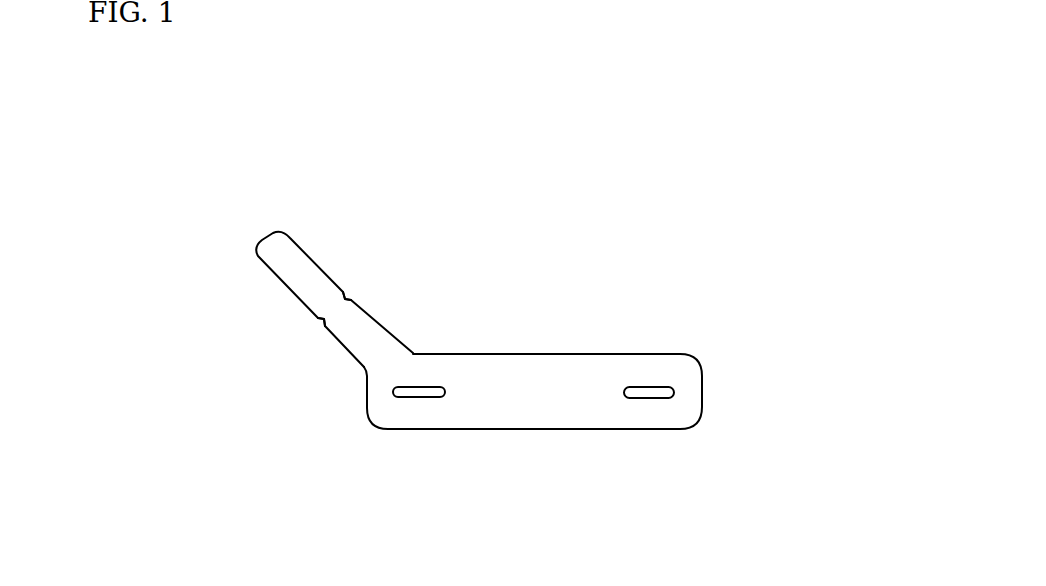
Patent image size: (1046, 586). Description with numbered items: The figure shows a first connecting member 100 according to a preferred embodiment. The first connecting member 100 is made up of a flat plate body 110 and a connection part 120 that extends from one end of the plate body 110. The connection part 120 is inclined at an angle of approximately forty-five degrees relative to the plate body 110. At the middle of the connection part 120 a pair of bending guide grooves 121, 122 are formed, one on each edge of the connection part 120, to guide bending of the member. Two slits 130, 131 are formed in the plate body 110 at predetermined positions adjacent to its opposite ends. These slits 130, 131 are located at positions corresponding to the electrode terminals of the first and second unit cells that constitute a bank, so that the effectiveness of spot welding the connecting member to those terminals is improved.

The first connecting member 100 is at (401, 319).
The plate body 110 is at (533, 394).
The connection part 120 is at (286, 299).
The bending guide groove 121 is at (319, 324).
The bending guide groove 122 is at (349, 296).
The slit 130 is at (417, 398).
The slit 131 is at (652, 398).